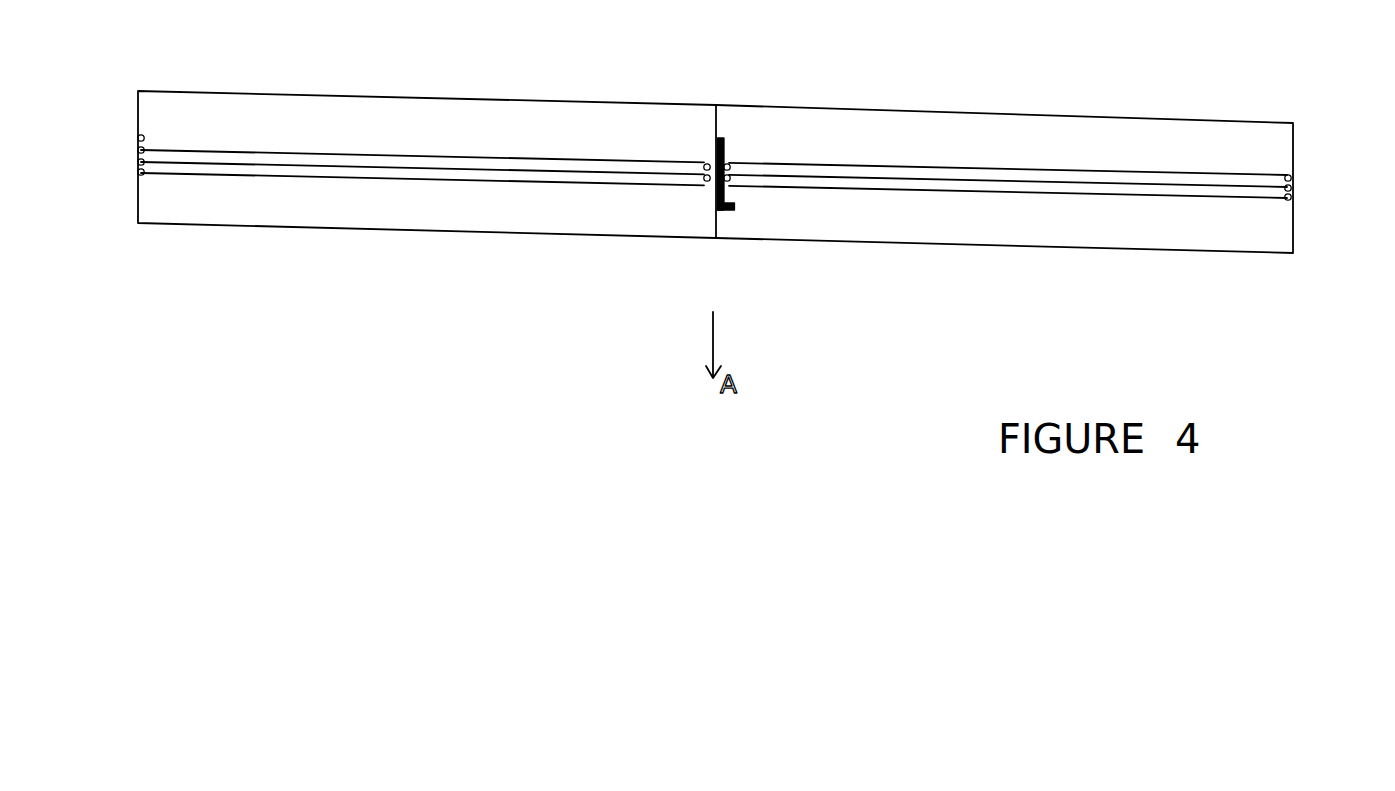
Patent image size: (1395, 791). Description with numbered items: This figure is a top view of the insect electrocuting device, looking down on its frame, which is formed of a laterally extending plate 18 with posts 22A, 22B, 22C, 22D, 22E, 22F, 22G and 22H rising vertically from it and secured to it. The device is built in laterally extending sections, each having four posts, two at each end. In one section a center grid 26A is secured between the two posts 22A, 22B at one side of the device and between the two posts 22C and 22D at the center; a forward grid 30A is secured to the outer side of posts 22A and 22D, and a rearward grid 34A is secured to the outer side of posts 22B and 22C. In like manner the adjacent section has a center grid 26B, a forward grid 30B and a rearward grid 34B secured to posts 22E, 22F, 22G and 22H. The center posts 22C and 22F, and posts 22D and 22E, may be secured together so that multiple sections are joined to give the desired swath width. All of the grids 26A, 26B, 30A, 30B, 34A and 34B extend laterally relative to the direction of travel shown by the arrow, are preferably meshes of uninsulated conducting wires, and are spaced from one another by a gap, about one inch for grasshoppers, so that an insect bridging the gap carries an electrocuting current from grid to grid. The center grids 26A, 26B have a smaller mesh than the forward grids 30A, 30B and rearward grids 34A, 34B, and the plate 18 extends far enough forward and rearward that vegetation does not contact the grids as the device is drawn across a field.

The plate 18 is at (923, 223).
The post 22A is at (1291, 198).
The post 22B is at (1291, 178).
The post 22C is at (728, 164).
The post 22D is at (732, 186).
The post 22E is at (713, 188).
The post 22F is at (708, 164).
The post 22G is at (142, 173).
The post 22H is at (142, 137).
The center grid 26A is at (1040, 185).
The center grid 26B is at (538, 170).
The forward grid 30A is at (990, 195).
The forward grid 30B is at (427, 180).
The rearward grid 34A is at (1085, 171).
The rearward grid 34B is at (465, 156).